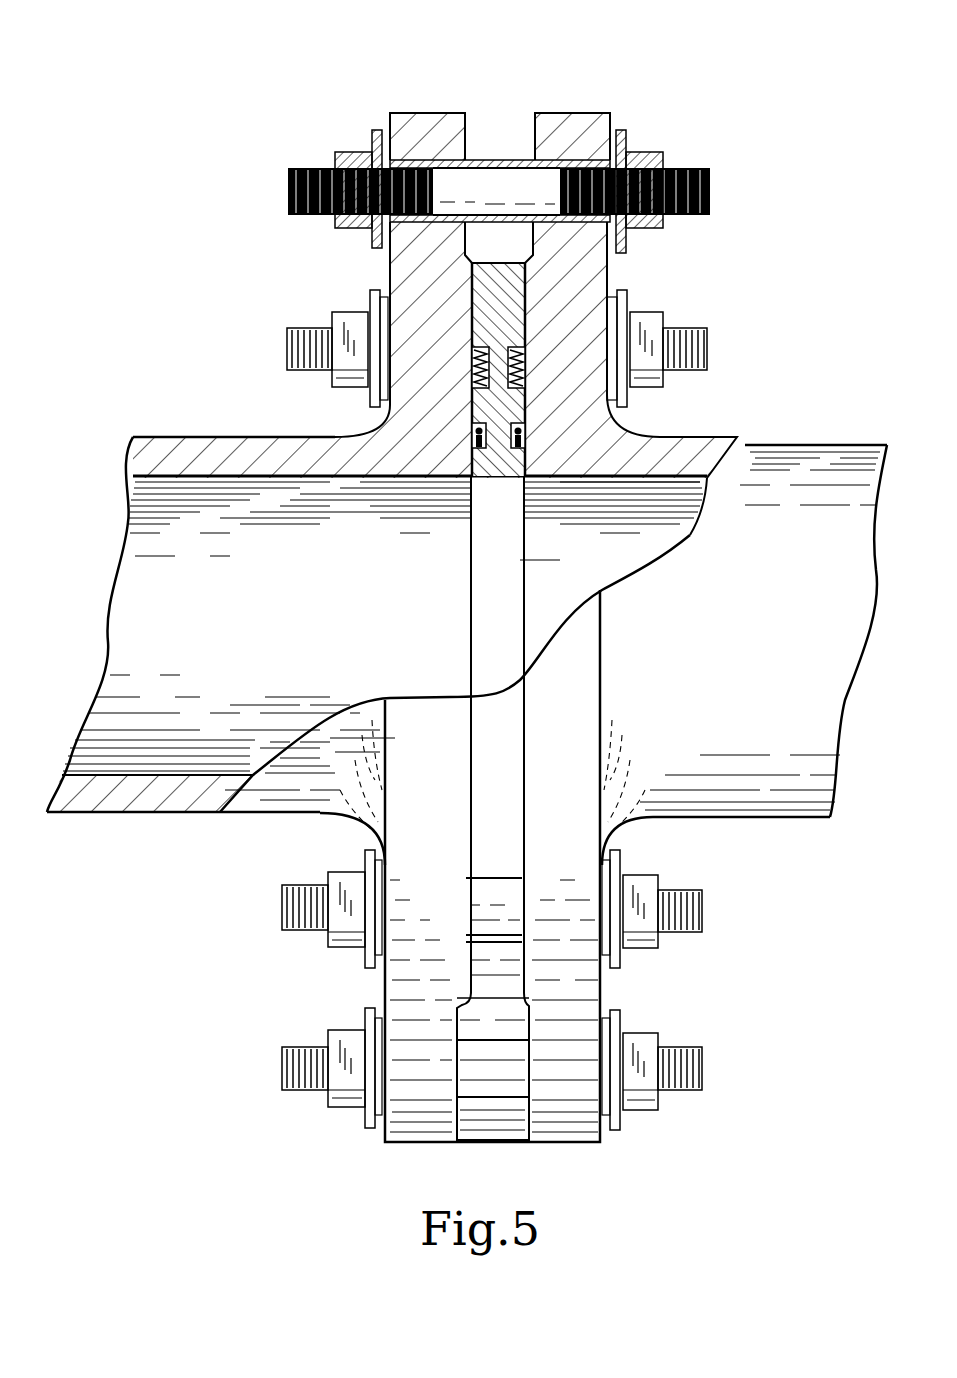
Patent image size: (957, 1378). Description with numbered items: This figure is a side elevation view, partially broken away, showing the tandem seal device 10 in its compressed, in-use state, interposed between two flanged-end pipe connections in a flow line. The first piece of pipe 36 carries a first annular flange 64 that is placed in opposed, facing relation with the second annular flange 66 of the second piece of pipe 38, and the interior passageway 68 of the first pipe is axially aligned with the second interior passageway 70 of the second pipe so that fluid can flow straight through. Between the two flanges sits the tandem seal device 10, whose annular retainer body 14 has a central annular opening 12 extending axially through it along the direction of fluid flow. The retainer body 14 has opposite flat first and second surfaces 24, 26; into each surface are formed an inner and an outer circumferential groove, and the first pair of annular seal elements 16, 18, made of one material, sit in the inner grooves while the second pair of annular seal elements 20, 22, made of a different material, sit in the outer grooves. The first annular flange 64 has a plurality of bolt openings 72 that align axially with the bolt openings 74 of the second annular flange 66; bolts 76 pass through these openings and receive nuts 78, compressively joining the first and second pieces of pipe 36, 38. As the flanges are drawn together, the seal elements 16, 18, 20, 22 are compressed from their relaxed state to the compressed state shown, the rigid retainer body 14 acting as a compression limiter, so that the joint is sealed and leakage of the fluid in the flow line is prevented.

The tandem seal device 10 is at (486, 802).
The central annular opening 12 is at (507, 599).
The annular retainer body 14 is at (503, 248).
The annular seal element 16 is at (470, 445).
The annular seal element 18 is at (525, 435).
The annular seal element 20 is at (470, 373).
The annular seal element 22 is at (528, 362).
The first surface 24 is at (470, 287).
The second surface 26 is at (525, 277).
The first piece of pipe 36 is at (392, 517).
The second piece of pipe 38 is at (763, 631).
The first annular flange 64 is at (385, 248).
The second annular flange 66 is at (605, 280).
The interior passageway 68 is at (220, 590).
The second interior passageway 70 is at (670, 510).
The bolt openings 72 is at (437, 160).
The bolt openings 74 is at (522, 165).
The bolts 76 is at (710, 185).
The nuts 78 is at (340, 152).